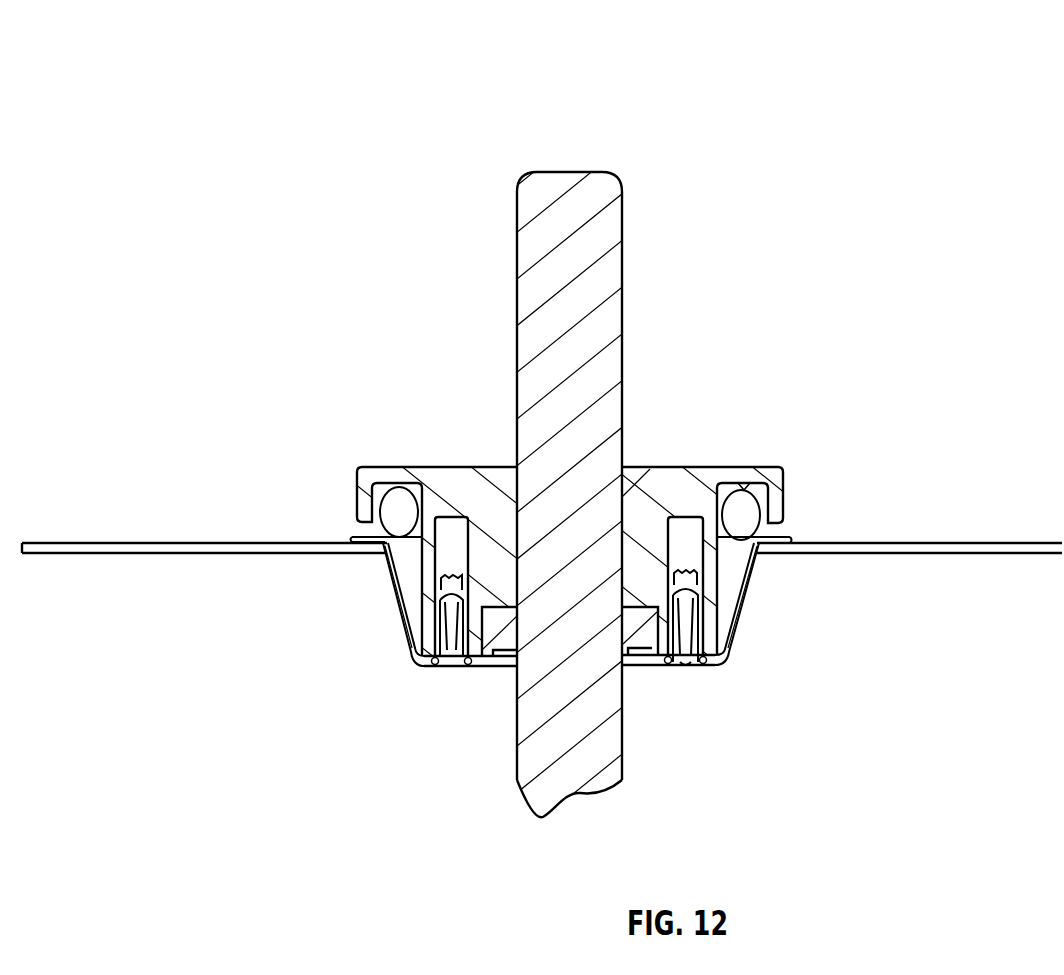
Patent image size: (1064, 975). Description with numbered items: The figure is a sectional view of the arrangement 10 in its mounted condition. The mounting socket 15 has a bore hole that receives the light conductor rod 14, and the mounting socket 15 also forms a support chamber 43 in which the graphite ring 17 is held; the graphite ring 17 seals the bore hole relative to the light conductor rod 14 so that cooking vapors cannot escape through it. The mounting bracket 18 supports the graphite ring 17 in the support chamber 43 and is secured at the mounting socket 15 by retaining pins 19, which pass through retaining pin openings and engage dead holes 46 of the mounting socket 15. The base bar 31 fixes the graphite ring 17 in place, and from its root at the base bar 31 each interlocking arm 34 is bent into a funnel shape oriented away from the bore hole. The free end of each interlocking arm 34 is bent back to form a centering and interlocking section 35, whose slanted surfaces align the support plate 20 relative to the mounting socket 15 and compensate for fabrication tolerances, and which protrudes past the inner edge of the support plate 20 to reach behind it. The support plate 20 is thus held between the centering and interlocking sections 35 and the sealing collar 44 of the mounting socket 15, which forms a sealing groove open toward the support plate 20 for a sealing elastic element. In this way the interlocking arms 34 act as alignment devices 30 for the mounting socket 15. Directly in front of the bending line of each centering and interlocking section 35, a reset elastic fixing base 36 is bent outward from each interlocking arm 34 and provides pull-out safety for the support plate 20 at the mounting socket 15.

The arrangement 10 is at (902, 177).
The light conductor rod 14 is at (642, 252).
The mounting socket 15 is at (702, 447).
The sealing collar 44 is at (763, 450).
The support chamber 43 is at (628, 590).
The dead holes 46 is at (698, 557).
The mounting bracket 18 is at (708, 672).
The retaining pins 19 is at (687, 667).
The centering and interlocking section 35 is at (392, 510).
The support plate 20 is at (348, 530).
The alignment devices 30 is at (588, 703).
The interlocking arm 34 is at (400, 622).
The fixing base 36 is at (380, 573).
The base bar 31 is at (472, 673).
The graphite ring 17 is at (641, 643).